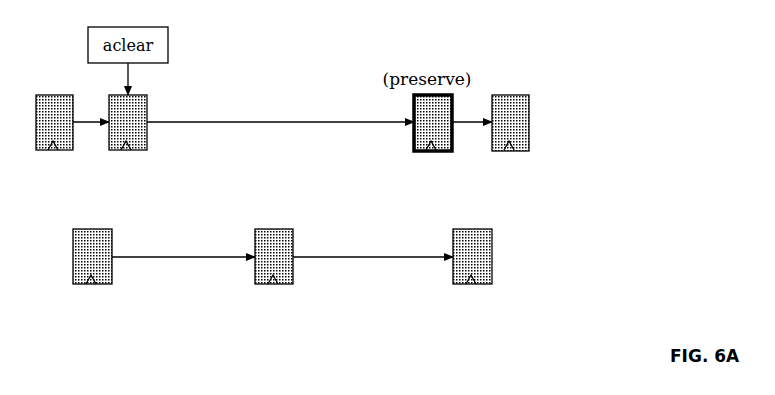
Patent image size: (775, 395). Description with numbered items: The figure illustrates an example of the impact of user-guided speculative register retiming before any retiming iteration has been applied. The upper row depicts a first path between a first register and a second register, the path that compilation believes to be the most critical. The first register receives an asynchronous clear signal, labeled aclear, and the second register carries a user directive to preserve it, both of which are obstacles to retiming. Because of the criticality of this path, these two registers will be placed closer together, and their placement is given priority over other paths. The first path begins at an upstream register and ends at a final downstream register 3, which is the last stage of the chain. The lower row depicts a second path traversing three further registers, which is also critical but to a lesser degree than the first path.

The register stage 3 (r3) 3 is at (510, 124).